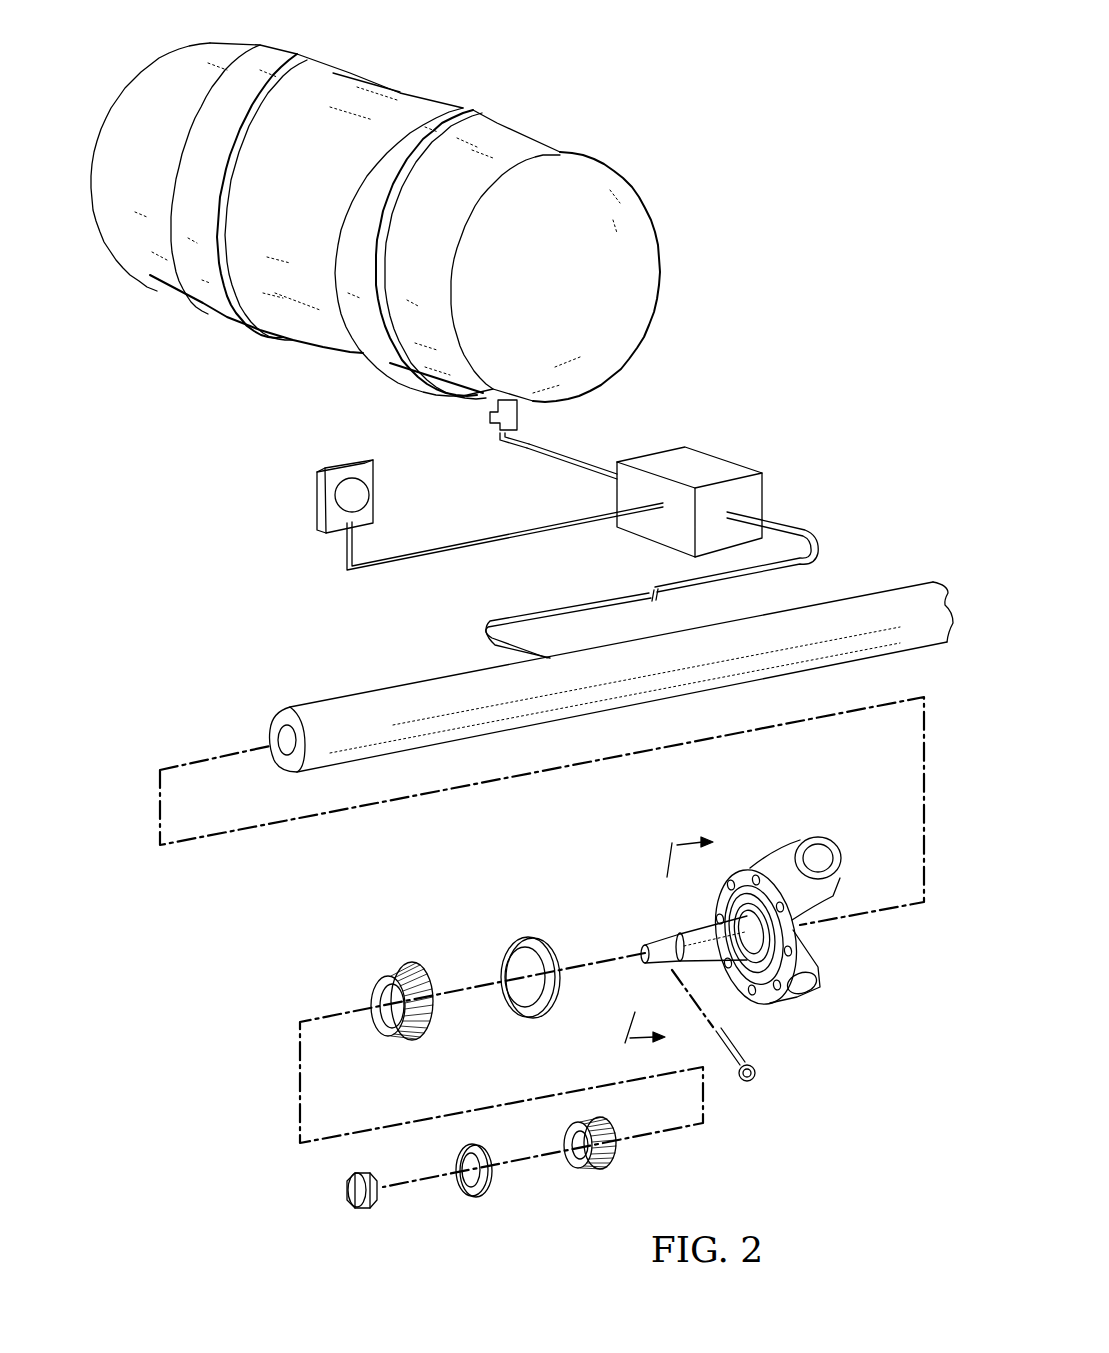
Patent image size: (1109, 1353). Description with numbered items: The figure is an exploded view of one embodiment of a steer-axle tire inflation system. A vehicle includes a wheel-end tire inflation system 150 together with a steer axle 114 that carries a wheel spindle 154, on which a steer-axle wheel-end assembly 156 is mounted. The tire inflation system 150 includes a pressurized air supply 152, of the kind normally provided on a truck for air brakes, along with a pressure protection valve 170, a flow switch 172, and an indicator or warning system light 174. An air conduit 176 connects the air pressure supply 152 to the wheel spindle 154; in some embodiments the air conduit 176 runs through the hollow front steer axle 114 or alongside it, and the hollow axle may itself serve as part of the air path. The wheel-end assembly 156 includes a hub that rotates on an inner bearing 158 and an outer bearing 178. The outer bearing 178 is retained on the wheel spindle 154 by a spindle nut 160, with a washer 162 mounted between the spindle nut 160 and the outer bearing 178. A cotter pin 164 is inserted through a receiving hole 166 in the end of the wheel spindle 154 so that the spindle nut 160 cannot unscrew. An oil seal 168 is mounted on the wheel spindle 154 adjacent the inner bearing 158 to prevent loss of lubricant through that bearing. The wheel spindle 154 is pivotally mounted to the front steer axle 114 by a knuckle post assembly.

The wheel-end tire inflation system 150 is at (746, 195).
The pressurized air supply 152 is at (658, 260).
The pressure protection valve 170 is at (488, 412).
The flow switch 172 is at (725, 458).
The indicator or warning system light 174 is at (315, 500).
The air conduit 176 is at (790, 527).
The front steer axle 114 is at (407, 682).
The steer-axle wheel-end assembly 156 is at (392, 878).
The inner bearing 158 is at (370, 992).
The oil seal 168 is at (508, 947).
The receiving hole 166 is at (662, 938).
The wheel spindle 154 is at (822, 978).
The cotter pin 164 is at (753, 1077).
The outer bearing 178 is at (613, 1150).
The washer 162 is at (490, 1175).
The spindle nut 160 is at (347, 1197).